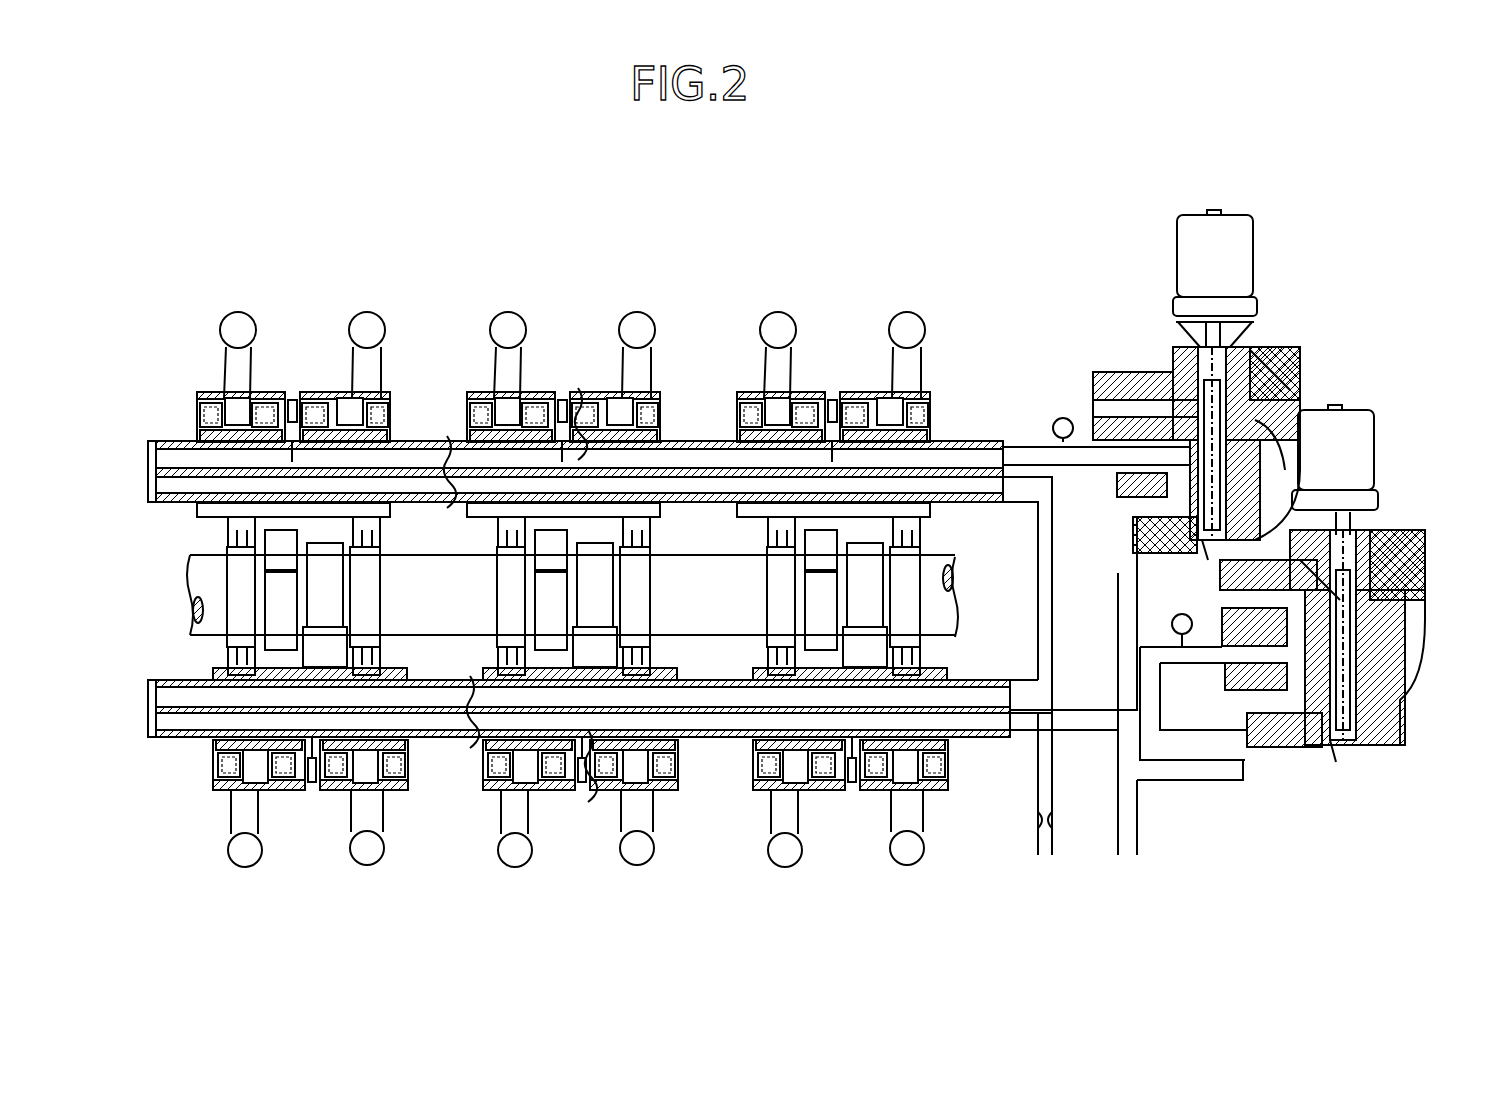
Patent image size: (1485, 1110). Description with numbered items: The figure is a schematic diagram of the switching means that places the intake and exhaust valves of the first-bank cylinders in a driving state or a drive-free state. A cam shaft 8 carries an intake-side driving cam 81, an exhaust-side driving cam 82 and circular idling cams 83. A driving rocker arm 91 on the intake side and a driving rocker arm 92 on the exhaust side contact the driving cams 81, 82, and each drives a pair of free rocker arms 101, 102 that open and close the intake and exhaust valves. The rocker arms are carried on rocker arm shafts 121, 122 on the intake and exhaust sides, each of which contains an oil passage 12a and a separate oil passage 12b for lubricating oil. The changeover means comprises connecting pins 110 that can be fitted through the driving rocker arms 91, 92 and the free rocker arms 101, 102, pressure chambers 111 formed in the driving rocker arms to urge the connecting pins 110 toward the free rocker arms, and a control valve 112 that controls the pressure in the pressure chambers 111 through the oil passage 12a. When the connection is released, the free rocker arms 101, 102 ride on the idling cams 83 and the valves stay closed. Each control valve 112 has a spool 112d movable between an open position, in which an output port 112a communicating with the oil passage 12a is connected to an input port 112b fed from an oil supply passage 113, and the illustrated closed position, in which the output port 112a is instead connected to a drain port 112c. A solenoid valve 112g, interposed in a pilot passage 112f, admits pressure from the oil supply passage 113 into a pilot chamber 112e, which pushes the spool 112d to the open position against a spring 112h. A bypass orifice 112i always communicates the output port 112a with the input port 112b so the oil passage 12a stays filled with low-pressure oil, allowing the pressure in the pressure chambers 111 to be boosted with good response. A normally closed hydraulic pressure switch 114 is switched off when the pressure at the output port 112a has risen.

The cam shaft 8 is at (700, 570).
The driving cam on the intake side 81 is at (275, 612).
The driving cam on the exhaust side 82 is at (330, 577).
The circular idling cam 83 is at (237, 573).
The driving rocker arm on the intake side 91 is at (278, 385).
The driving rocker arm on the exhaust side 92 is at (328, 790).
The free rocker arm on the intake side 101 is at (238, 314).
The free rocker arm on the exhaust side 102 is at (245, 852).
The connecting pin 110 is at (240, 412).
The pressure chamber 111 is at (295, 443).
The rocker arm shaft on the intake side 121 is at (693, 440).
The rocker arm shaft on the exhaust side 122 is at (722, 742).
The oil passage 12a is at (967, 460).
The oil passage for lubricating oil 12b is at (973, 487).
The control valve 112 is at (1278, 316).
The output port 112a is at (1187, 455).
The input port 112b is at (1167, 523).
The drain port 112c is at (1180, 400).
The spool 112d is at (1255, 410).
The pilot chamber 112e is at (1257, 367).
The pilot passage 112f is at (1285, 380).
The solenoid valve 112g is at (1250, 250).
The spring 112h is at (1330, 763).
The bypass orifice 112i is at (1177, 510).
The oil supply passage 113 is at (1138, 827).
The hydraulic pressure switch 114 is at (1067, 417).